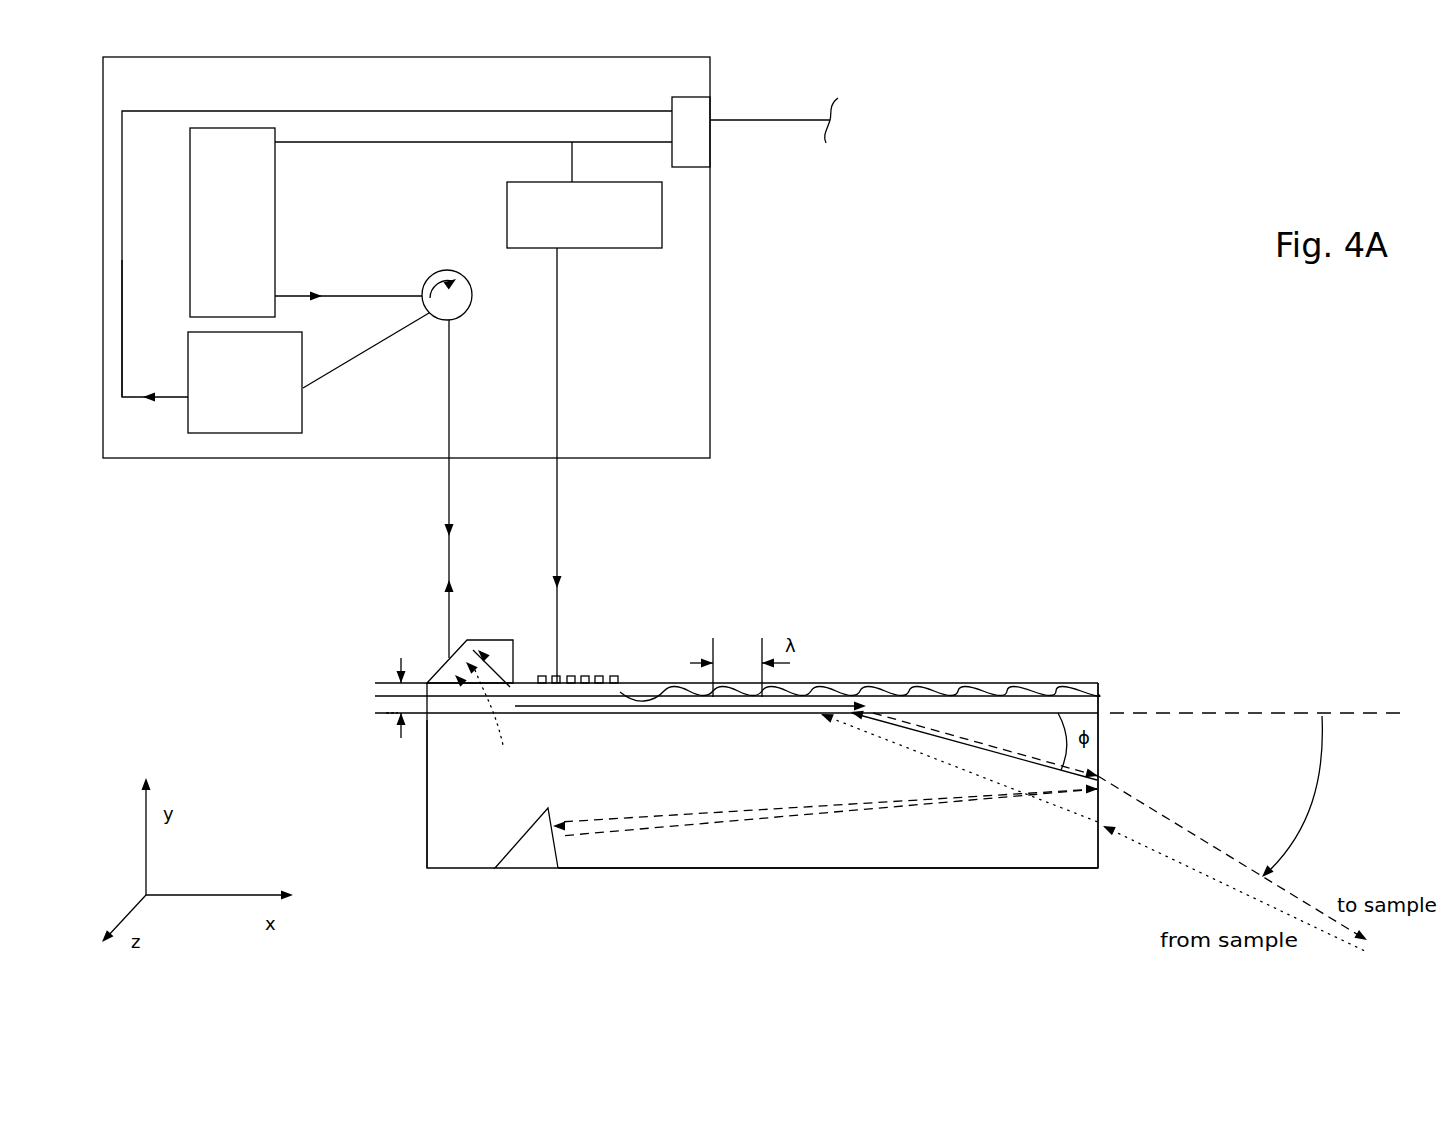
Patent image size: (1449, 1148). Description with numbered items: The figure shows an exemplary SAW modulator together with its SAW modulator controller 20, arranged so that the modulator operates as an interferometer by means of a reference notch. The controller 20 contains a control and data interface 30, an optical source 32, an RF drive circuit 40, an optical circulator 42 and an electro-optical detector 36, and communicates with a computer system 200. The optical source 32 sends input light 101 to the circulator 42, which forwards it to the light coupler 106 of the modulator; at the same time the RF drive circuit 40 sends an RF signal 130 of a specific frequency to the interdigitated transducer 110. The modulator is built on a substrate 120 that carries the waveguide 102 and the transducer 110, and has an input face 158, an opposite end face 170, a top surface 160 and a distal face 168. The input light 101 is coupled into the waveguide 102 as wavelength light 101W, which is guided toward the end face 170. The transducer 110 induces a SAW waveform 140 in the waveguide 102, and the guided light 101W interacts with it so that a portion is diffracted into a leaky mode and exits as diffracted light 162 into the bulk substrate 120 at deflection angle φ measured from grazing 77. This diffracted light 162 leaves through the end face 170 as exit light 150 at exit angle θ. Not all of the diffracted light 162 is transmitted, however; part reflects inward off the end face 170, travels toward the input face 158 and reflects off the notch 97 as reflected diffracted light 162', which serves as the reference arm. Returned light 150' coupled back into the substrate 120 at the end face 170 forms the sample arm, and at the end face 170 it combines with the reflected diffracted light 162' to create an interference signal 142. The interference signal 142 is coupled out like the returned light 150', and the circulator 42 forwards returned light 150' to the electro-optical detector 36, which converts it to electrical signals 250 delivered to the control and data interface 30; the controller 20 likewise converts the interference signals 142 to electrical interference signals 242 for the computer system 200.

The SAW modulator controller 20 is at (566, 82).
The control and data interface 30 is at (712, 147).
The optical source 32 is at (245, 256).
The electro-optical detector 36 is at (257, 426).
The RF drive circuit 40 is at (597, 238).
The optical circulator 42 is at (447, 270).
The grazing 77 is at (1268, 713).
The notch 97 is at (558, 880).
The input light 101 is at (322, 290).
The wavelength light 101W is at (717, 707).
The waveguide 102 is at (454, 738).
The light coupler 106 is at (505, 640).
The interdigitated transducer 110 is at (622, 683).
The substrate 120 is at (620, 874).
The RF signal 130 is at (560, 583).
The SAW waveform 140 is at (860, 695).
The interference signal 142 is at (928, 740).
The exit light 150 is at (1263, 830).
The returned light 150' is at (835, 632).
The input face 158 is at (418, 818).
The top surface 160 is at (1007, 678).
The diffracted light 162 is at (899, 729).
The reflected diffracted light 162' is at (825, 842).
The distal face 168 is at (1015, 868).
The end face 170 is at (1098, 733).
The computer system 200 is at (1006, 161).
The electrical interference signals 242 is at (117, 392).
The electrical signals 250 is at (148, 403).